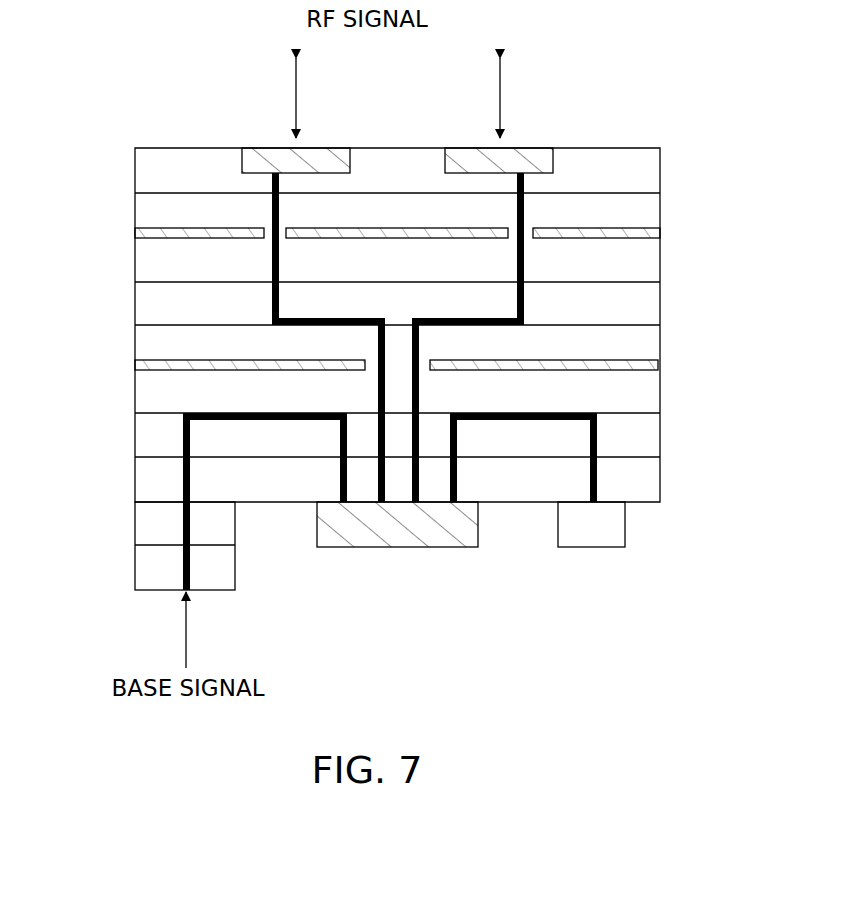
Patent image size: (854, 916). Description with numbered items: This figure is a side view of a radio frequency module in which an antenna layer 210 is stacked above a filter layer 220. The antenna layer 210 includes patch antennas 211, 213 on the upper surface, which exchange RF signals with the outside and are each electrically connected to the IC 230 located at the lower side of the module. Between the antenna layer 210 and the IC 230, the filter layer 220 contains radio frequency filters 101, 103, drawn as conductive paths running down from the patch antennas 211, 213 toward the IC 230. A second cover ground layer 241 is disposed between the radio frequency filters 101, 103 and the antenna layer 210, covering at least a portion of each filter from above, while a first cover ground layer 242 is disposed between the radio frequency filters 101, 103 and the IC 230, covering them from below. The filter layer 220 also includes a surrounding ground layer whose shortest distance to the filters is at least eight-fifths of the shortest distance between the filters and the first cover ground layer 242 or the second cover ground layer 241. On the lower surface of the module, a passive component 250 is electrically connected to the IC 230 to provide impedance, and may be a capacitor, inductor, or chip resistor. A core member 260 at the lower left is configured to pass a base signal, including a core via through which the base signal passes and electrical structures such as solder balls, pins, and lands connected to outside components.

The antenna layer 210 is at (156, 151).
The patch antenna 211 is at (326, 148).
The patch antenna 213 is at (469, 148).
The second cover ground layer 241 is at (632, 231).
The first cover ground layer 242 is at (632, 362).
The radio frequency filter 101 is at (332, 318).
The radio frequency filter 103 is at (467, 318).
The filter layer 220 is at (158, 327).
The core member 260 is at (150, 556).
The IC 230 is at (397, 535).
The passive component 250 is at (586, 532).